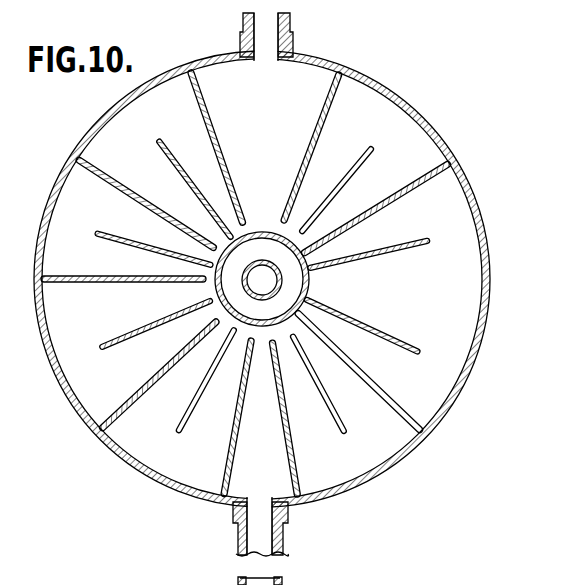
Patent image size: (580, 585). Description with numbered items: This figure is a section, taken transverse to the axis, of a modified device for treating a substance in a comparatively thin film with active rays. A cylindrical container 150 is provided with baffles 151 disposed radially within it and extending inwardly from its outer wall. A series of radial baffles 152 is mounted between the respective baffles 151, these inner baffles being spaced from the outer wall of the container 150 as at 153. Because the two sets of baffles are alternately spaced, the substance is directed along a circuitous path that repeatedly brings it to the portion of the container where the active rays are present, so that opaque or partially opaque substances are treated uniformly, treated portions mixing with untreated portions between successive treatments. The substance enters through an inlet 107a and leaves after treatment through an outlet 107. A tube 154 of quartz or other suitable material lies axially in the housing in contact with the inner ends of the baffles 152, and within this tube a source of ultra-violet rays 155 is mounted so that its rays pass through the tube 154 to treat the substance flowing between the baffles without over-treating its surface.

The outlet 107 is at (292, 28).
The inlet 107a is at (270, 542).
The container 150 is at (474, 344).
The baffles 151 is at (400, 200).
The radial baffles 152 is at (400, 248).
The space 153 is at (450, 227).
The tube 154 is at (260, 232).
The source of ultra-violet rays 155 is at (283, 281).